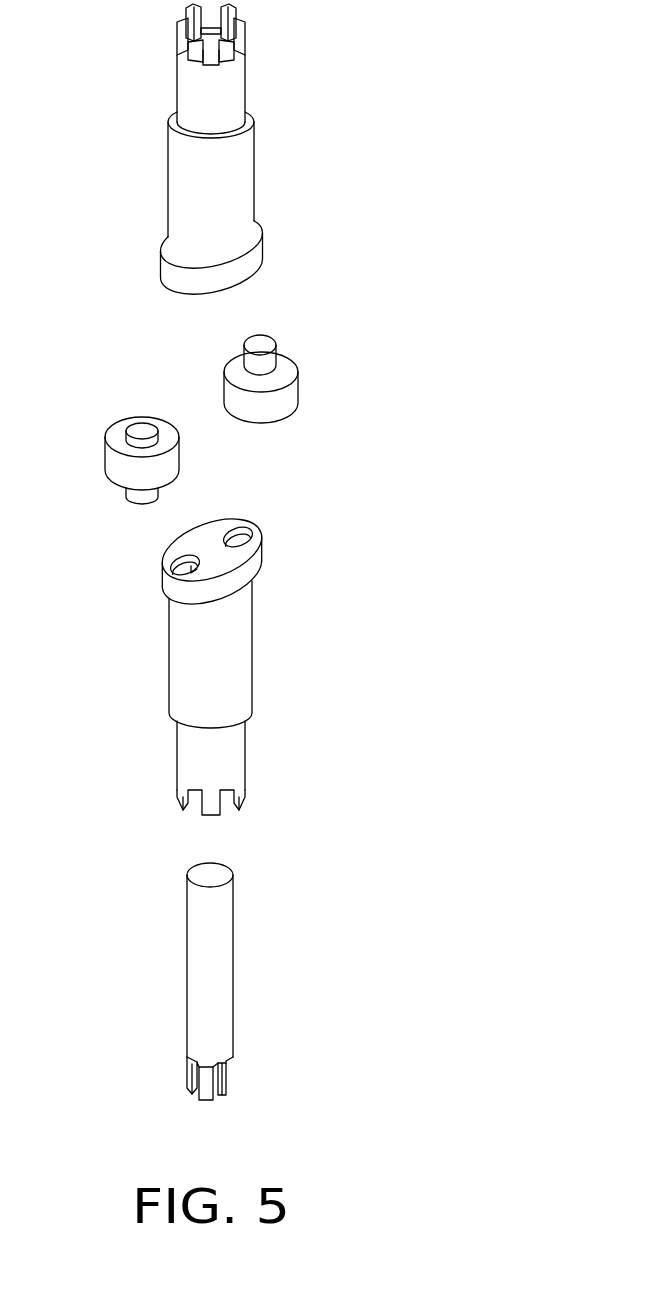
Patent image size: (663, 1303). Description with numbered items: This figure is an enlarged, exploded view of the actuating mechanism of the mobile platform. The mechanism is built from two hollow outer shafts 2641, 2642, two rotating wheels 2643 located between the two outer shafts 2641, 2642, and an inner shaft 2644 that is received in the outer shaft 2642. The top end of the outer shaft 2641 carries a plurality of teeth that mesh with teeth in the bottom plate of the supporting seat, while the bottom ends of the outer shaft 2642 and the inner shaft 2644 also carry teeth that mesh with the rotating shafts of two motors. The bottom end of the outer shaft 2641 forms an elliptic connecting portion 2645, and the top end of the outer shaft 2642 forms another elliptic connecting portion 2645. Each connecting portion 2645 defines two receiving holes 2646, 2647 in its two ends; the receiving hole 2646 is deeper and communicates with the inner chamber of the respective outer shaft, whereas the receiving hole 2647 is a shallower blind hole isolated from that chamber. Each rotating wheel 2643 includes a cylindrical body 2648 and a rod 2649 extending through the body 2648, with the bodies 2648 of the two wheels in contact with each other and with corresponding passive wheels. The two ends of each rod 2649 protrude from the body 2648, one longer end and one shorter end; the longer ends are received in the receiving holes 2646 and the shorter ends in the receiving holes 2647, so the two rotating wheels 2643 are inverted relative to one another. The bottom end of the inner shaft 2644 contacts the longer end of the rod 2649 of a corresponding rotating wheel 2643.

The outer shaft 2641 is at (227, 167).
The outer shaft 2642 is at (221, 656).
The rotating wheel 2643 is at (372, 379).
The inner shaft 2644 is at (202, 974).
The elliptic connecting portion 2645 is at (257, 263).
The receiving hole 2646 is at (177, 565).
The receiving hole 2647 is at (238, 537).
The cylindrical body 2648 is at (283, 402).
The rod 2649 is at (268, 364).